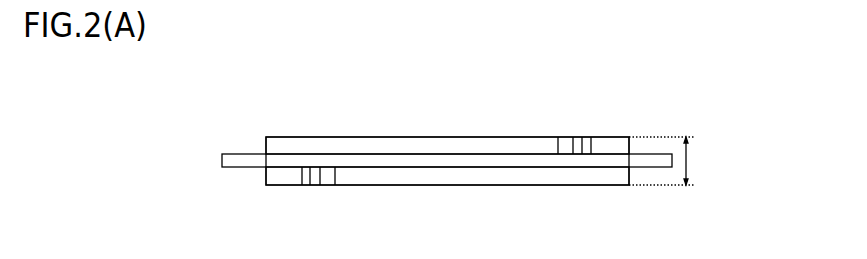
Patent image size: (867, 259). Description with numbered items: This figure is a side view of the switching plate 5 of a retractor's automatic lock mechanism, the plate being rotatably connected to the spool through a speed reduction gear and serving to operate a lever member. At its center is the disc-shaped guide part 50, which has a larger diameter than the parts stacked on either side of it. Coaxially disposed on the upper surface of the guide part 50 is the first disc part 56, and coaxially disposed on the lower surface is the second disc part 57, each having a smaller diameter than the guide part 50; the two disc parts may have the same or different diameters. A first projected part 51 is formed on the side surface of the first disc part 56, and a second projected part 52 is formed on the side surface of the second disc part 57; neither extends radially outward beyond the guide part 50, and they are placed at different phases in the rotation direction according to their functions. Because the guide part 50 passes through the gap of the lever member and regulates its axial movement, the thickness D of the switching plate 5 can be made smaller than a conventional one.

The switching plate 5 is at (338, 123).
The guide part 50 is at (244, 153).
The first projected part 51 is at (577, 143).
The second projected part 52 is at (315, 186).
The first disc part 56 is at (490, 137).
The second disc part 57 is at (405, 185).
The thickness D is at (666, 161).